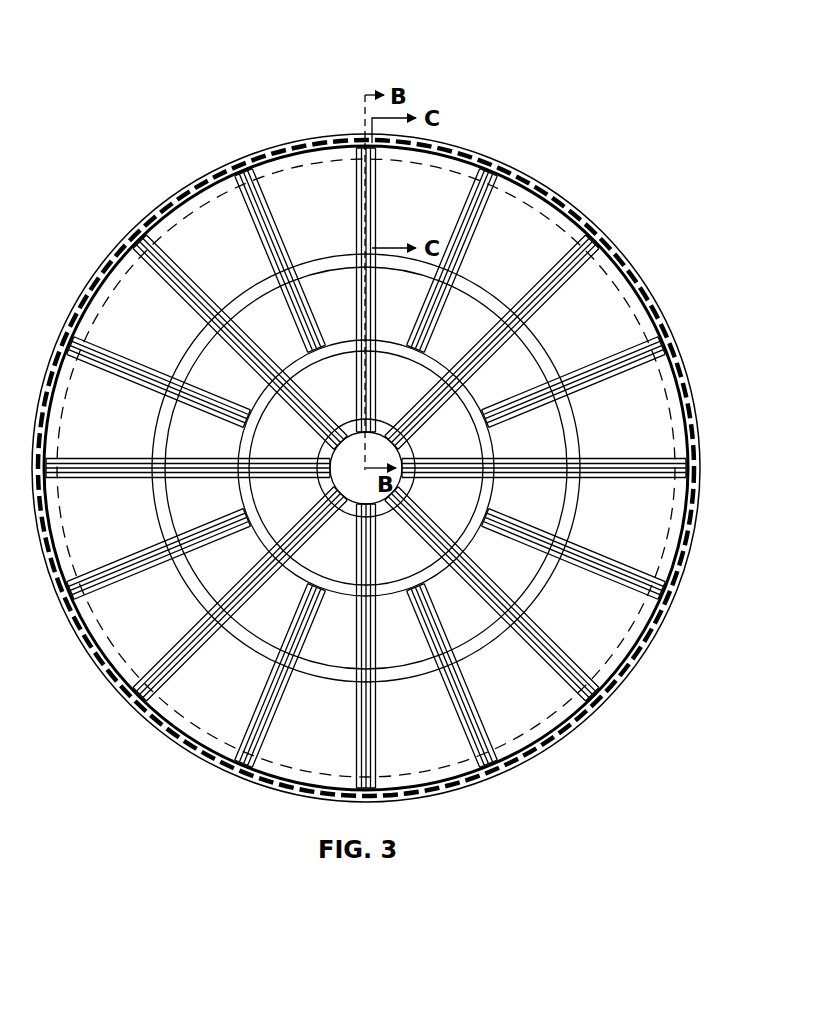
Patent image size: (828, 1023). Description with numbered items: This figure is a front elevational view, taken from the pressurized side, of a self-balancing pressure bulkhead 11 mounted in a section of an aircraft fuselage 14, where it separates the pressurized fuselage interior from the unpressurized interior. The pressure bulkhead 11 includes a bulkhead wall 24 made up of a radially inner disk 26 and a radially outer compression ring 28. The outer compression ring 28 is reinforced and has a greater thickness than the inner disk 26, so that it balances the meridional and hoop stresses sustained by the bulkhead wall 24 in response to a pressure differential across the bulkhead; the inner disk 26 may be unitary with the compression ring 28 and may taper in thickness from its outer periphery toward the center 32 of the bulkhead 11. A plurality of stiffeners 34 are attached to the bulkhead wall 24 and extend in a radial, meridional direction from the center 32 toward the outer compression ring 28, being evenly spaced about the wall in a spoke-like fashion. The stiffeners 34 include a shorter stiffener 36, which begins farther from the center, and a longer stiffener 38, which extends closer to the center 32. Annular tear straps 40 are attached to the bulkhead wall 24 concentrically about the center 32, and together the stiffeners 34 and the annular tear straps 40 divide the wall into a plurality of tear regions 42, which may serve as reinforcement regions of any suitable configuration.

The pressure bulkhead 11 is at (114, 62).
The fuselage 14 is at (190, 753).
The bulkhead wall 24 is at (296, 197).
The radially inner disk 26 is at (196, 502).
The outer compression ring 28 is at (102, 292).
The center 32 is at (352, 468).
The stiffeners 34 is at (376, 300).
The shorter stiffener 36 is at (625, 574).
The longer stiffener 38 is at (637, 467).
The annular tear straps 40 is at (538, 333).
The tear regions 42 is at (650, 388).